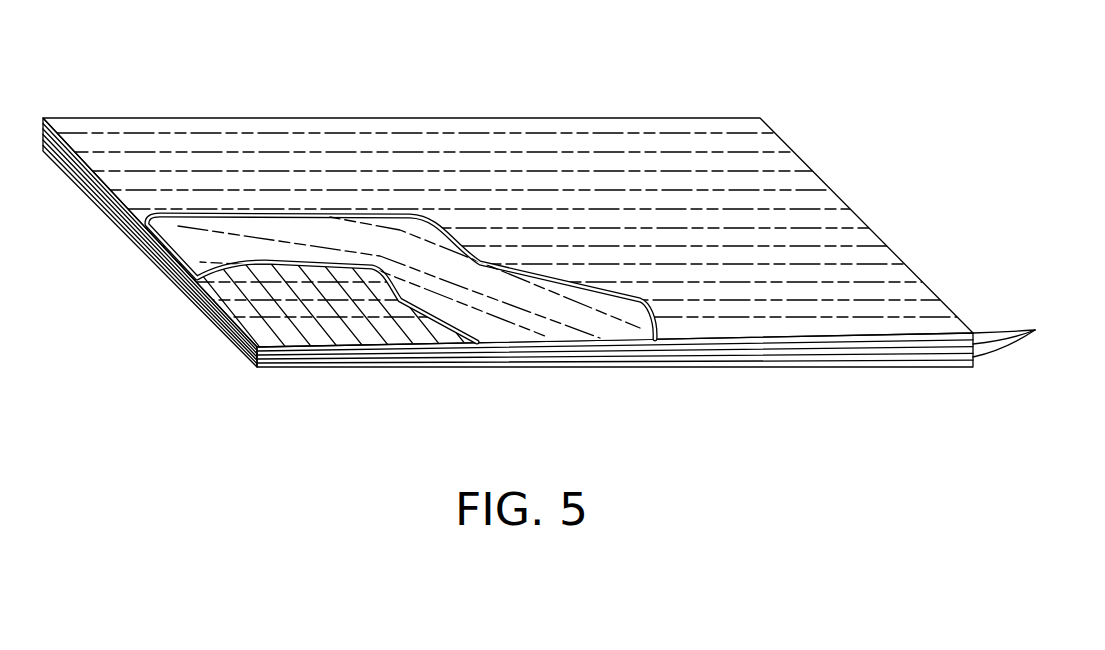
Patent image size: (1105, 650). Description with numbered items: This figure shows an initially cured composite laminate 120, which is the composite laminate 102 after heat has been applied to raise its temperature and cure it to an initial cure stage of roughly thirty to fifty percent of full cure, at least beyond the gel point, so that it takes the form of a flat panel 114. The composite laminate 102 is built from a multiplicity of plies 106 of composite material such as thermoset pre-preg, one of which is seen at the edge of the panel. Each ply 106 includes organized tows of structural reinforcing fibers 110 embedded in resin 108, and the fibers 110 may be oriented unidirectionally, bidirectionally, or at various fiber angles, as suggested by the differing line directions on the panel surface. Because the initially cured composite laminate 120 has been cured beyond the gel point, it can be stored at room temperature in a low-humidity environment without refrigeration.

The initially cured composite laminate 120 is at (569, 238).
The composite laminate 102 is at (539, 281).
The flat panel 114 is at (507, 225).
The fibers 110 is at (697, 315).
The resin 108 is at (572, 327).
The ply 106 is at (1034, 333).